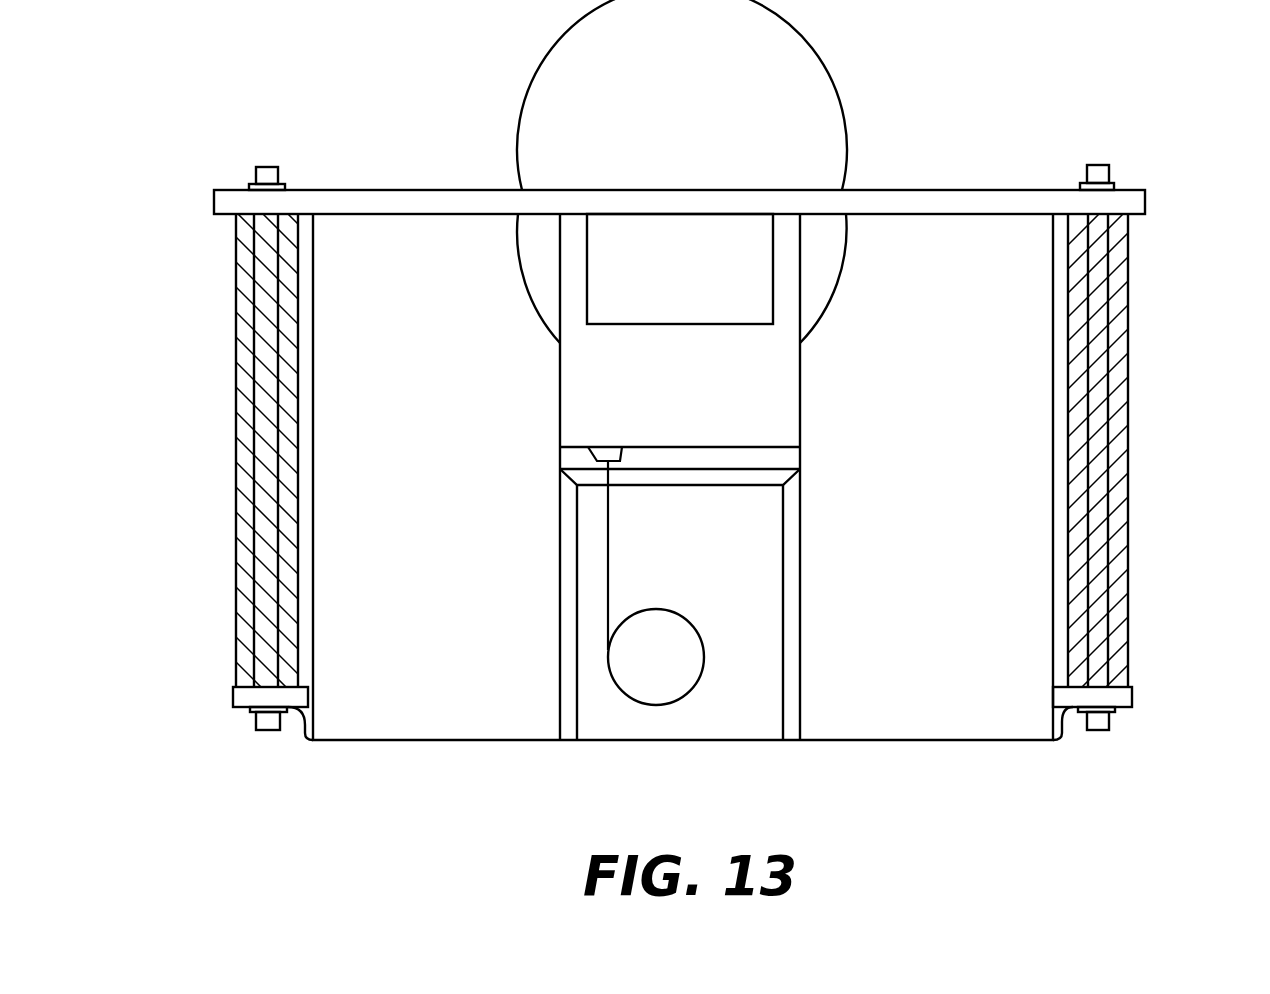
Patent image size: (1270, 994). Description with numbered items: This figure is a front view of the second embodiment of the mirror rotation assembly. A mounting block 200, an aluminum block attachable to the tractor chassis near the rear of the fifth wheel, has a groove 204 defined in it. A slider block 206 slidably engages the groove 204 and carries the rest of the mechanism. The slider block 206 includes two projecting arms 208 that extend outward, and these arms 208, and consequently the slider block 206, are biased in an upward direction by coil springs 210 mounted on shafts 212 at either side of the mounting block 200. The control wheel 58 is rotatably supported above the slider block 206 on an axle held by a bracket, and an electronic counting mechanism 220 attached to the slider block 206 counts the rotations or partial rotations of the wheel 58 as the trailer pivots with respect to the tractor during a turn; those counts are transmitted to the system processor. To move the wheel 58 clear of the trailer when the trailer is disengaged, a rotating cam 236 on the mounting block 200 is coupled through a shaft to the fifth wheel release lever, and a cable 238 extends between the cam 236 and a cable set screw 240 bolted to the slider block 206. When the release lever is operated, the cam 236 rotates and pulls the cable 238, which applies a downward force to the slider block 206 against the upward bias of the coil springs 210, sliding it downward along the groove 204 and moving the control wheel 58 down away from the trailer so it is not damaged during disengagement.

The control wheel 58 is at (648, 88).
The mounting block 200 is at (430, 707).
The groove 204 is at (772, 598).
The slider block 206 is at (570, 412).
The projecting arms 208 is at (404, 199).
The coil springs 210 is at (243, 288).
The shafts 212 is at (263, 337).
The electronic counting mechanism 220 is at (752, 285).
The rotating cam 236 is at (698, 668).
The cable 238 is at (604, 590).
The cable set screw 240 is at (612, 452).